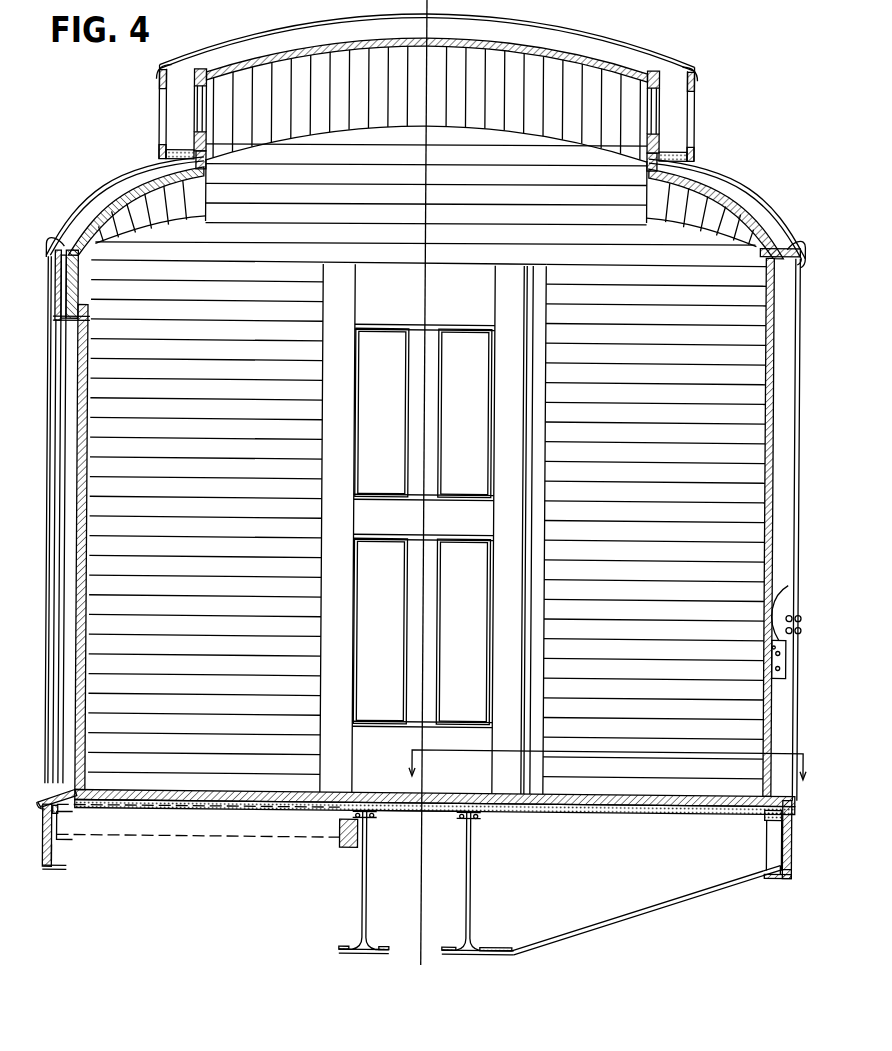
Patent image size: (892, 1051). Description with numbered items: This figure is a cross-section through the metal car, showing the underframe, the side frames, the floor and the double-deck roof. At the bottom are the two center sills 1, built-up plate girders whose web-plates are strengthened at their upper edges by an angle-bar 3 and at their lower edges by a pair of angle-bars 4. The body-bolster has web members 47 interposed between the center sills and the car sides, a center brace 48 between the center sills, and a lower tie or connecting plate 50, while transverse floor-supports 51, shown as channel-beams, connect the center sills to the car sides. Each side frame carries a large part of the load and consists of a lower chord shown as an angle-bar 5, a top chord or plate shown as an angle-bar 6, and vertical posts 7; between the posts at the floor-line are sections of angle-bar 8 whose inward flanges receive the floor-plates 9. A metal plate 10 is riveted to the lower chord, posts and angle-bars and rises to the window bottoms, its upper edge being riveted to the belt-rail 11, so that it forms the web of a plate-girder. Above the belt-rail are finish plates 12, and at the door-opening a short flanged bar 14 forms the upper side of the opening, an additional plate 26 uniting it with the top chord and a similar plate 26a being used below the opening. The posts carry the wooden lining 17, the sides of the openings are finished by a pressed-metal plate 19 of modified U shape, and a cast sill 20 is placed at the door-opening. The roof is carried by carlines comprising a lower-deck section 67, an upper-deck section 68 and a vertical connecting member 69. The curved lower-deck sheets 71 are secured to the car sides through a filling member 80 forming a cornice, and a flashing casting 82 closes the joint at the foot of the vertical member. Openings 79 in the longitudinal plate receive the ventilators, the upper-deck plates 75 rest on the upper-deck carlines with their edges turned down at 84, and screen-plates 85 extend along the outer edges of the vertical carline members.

The center sill 1 is at (470, 890).
The angle-bar 3 is at (503, 826).
The angle-bars 4 is at (382, 955).
The angle-bar 5 is at (60, 874).
The angle-bar 6 is at (68, 240).
The posts 7 is at (801, 459).
The angle-bar 8 is at (63, 816).
The floor-plates 9 is at (190, 810).
The metal plate 10 is at (48, 840).
The belt-rail 11 is at (797, 591).
The plates 12 is at (78, 295).
The flanged bar 14 is at (68, 324).
The wooden lining 17 is at (82, 274).
The pressed-metal plate 19 is at (58, 671).
The sills 20 is at (47, 781).
The plate 26 is at (85, 265).
The plate 26a is at (60, 857).
The web members 47 is at (675, 877).
The center brace 48 is at (416, 836).
The connecting plate 50 is at (505, 960).
The transverse floor-supports 51 is at (262, 829).
The lower-deck section 67 is at (115, 192).
The upper-deck section 68 is at (528, 38).
The vertical connecting members 69 is at (182, 98).
The lower-deck sheets 71 is at (82, 206).
The upper-deck plates 75 is at (600, 40).
The openings 79 is at (207, 112).
The filling member 80 is at (55, 275).
The flashing casting 82 is at (177, 149).
The turned-down edges 84 is at (157, 74).
The screen-plates 85 is at (163, 117).